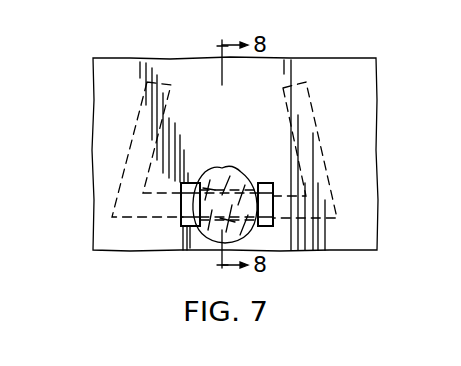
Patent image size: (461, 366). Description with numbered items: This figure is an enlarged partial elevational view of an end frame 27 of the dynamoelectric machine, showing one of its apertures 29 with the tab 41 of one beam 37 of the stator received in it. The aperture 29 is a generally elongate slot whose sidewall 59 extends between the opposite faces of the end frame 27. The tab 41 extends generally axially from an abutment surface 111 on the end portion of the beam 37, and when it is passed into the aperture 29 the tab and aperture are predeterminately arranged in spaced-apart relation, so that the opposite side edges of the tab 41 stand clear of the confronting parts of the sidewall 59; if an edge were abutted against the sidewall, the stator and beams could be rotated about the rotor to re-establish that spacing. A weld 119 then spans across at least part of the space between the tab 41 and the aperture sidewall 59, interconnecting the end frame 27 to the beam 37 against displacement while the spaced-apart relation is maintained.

The end frame 27 is at (135, 58).
The beam 37 is at (320, 133).
The abutment surface 111 is at (316, 162).
The tab 41 is at (181, 212).
The sidewall 59 is at (273, 207).
The aperture 29 is at (264, 226).
The weld 119 is at (222, 167).